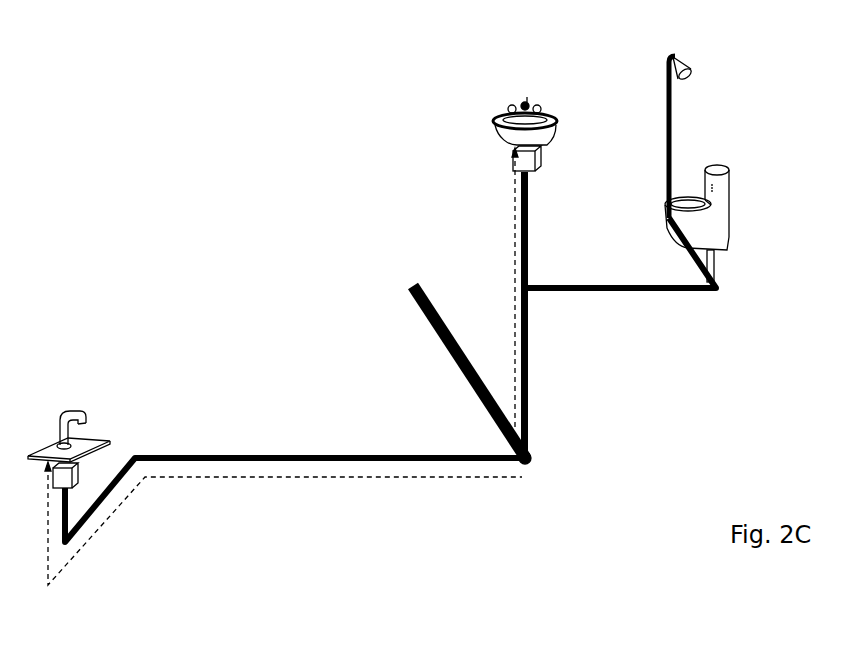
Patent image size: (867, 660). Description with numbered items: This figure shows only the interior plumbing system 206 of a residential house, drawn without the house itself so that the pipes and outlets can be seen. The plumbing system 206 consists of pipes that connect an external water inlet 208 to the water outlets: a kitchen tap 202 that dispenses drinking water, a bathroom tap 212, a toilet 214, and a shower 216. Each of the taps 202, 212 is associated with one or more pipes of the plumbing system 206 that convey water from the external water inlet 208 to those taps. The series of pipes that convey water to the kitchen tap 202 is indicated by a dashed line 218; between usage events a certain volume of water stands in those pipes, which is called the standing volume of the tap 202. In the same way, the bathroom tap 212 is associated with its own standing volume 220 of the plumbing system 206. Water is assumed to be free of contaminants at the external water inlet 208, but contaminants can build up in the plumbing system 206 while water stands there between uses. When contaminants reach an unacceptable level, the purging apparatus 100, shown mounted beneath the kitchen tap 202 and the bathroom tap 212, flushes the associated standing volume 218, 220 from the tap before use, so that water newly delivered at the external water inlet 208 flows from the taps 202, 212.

The purging apparatus 100 is at (80, 478).
The tap 202 is at (64, 408).
The plumbing system 206 is at (592, 285).
The external water inlet 208 is at (530, 462).
The bathroom tap 212 is at (527, 100).
The toilet 214 is at (731, 218).
The shower 216 is at (690, 66).
The dashed line indicating pipes conveying water to the kitchen tap 218 is at (320, 480).
The standing volume 220 is at (515, 255).